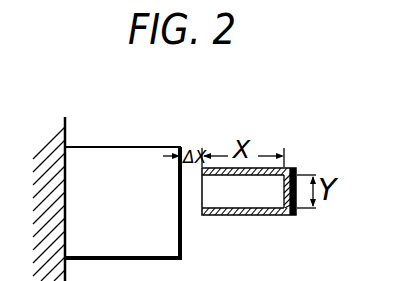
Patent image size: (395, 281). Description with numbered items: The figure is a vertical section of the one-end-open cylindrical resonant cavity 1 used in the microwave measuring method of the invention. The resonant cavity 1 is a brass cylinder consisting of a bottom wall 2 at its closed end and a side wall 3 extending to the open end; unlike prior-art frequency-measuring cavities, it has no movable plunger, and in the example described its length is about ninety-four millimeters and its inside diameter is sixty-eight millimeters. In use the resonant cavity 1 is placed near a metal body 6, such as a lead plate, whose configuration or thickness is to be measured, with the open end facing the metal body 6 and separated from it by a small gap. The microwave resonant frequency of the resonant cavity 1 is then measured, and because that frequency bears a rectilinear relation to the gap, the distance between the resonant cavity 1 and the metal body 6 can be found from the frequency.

The one-end-open cylindrical resonant cavity 1 is at (250, 219).
The bottom wall 2 is at (286, 197).
The side wall 3 is at (216, 210).
The metal body 6 is at (125, 146).